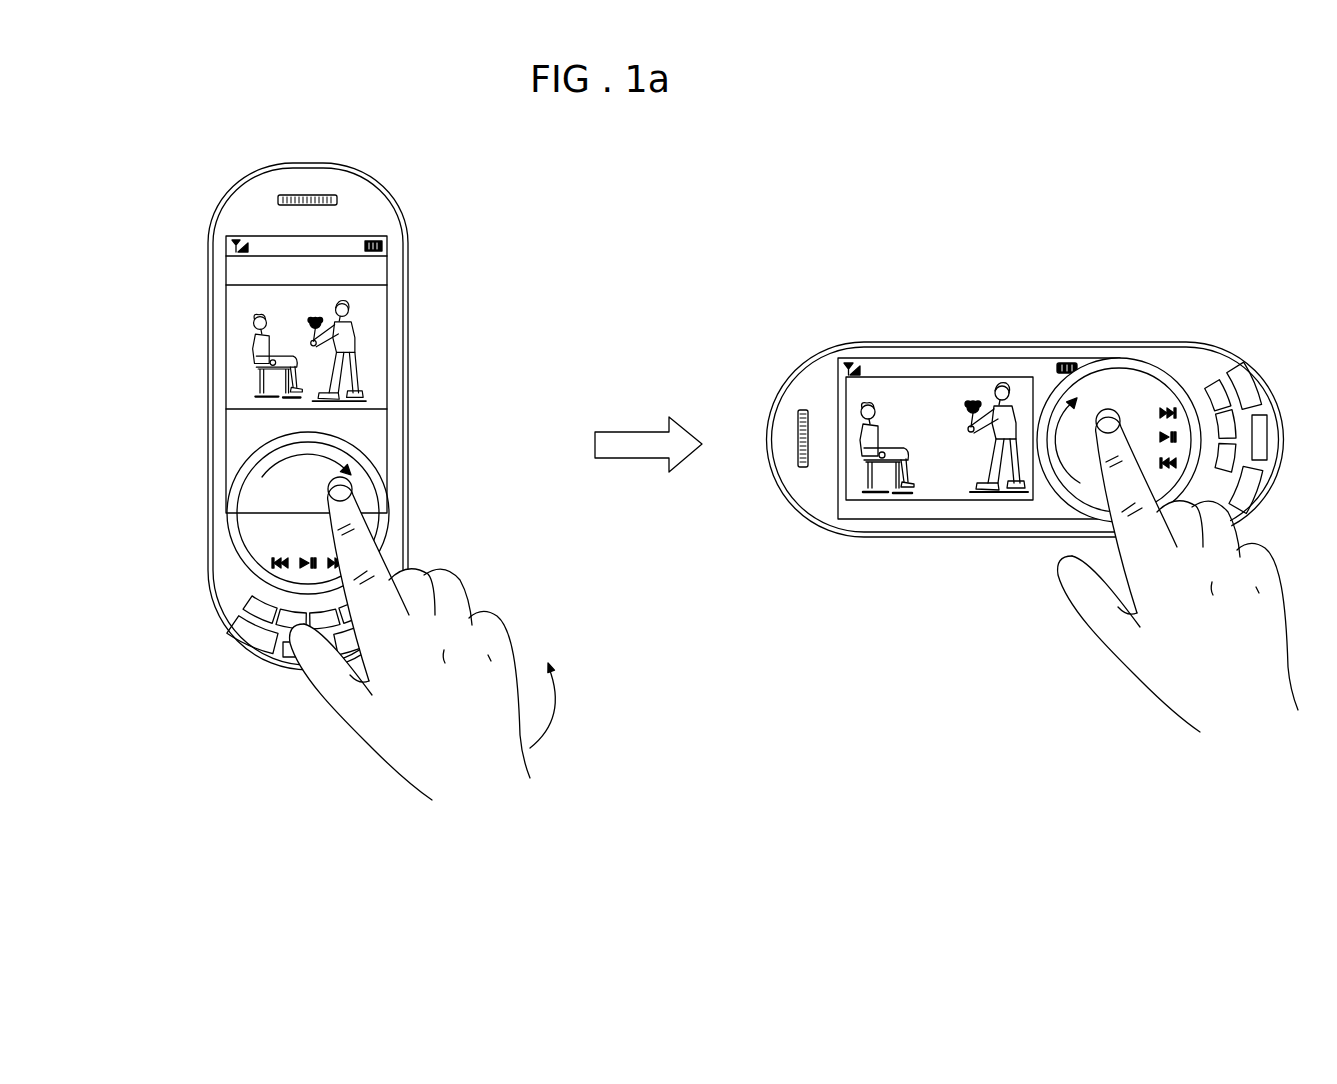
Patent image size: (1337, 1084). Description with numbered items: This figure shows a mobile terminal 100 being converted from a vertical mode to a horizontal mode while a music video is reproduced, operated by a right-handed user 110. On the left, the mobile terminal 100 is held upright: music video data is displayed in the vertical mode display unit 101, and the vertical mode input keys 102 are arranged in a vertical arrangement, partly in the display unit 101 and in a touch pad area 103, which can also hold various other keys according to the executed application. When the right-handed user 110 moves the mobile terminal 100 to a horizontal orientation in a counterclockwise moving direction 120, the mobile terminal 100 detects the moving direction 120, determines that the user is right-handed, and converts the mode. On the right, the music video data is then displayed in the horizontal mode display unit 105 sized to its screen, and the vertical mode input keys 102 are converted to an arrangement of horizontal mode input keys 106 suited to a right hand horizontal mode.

The mobile terminal 100 is at (385, 183).
The vertical mode display unit 101 is at (388, 335).
The vertical mode input keys 102 is at (367, 453).
The touch pad area 103 is at (232, 588).
The horizontal mode display unit 105 is at (981, 358).
The horizontal mode input keys 106 is at (1142, 360).
The right-handed user 110 is at (462, 597).
The moving direction 120 is at (553, 713).